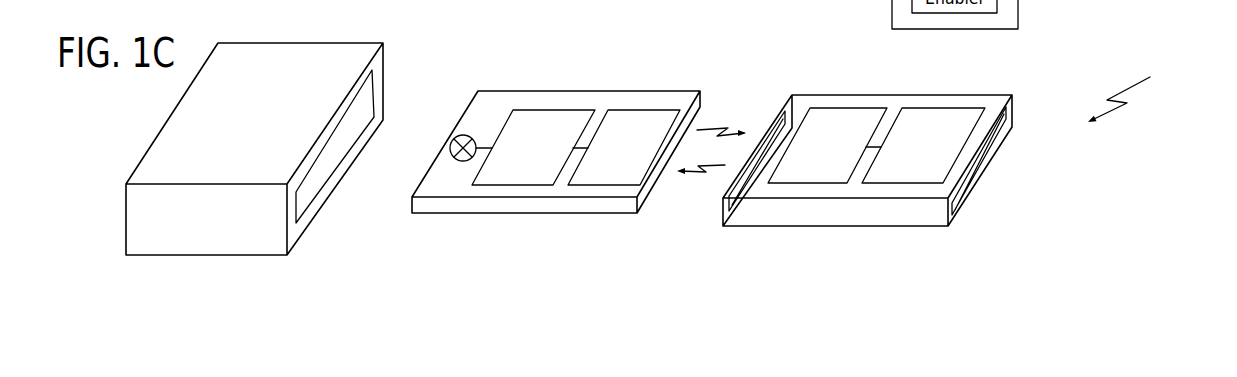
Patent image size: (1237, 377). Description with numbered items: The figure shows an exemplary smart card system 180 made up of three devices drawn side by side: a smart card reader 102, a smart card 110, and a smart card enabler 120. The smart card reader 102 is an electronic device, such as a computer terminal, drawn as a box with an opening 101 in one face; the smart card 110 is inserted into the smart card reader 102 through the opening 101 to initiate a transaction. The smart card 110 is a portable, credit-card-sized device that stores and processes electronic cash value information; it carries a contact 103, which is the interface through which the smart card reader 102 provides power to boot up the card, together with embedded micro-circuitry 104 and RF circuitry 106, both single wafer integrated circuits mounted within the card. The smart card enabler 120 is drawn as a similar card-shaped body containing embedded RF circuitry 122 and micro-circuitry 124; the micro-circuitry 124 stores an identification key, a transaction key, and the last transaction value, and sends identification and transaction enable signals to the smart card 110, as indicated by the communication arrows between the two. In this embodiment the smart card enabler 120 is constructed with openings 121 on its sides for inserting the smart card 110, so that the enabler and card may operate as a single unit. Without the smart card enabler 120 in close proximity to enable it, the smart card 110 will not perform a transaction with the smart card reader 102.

The opening 101 is at (367, 103).
The smart card reader 102 is at (383, 43).
The contact 103 is at (458, 162).
The micro-circuitry 104 is at (528, 185).
The RF circuitry 106 is at (597, 185).
The smart card 110 is at (700, 92).
The smart card enabler 120 is at (1012, 95).
The opening 121 is at (766, 122).
The RF circuitry 122 is at (825, 183).
The micro-circuitry 124 is at (890, 183).
The smart card system 180 is at (1135, 93).